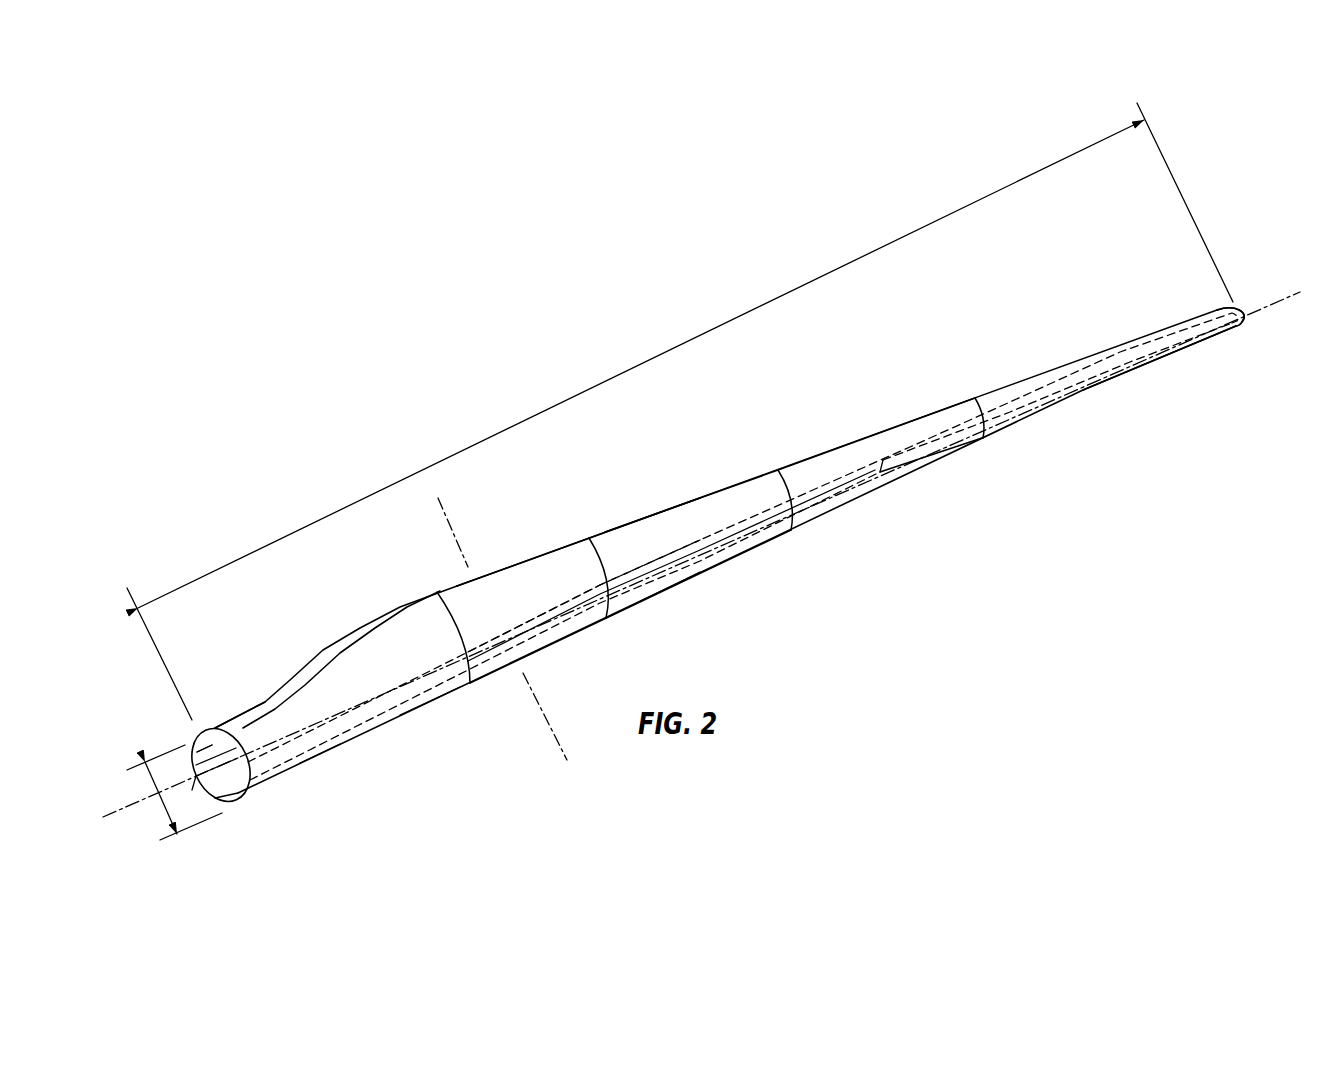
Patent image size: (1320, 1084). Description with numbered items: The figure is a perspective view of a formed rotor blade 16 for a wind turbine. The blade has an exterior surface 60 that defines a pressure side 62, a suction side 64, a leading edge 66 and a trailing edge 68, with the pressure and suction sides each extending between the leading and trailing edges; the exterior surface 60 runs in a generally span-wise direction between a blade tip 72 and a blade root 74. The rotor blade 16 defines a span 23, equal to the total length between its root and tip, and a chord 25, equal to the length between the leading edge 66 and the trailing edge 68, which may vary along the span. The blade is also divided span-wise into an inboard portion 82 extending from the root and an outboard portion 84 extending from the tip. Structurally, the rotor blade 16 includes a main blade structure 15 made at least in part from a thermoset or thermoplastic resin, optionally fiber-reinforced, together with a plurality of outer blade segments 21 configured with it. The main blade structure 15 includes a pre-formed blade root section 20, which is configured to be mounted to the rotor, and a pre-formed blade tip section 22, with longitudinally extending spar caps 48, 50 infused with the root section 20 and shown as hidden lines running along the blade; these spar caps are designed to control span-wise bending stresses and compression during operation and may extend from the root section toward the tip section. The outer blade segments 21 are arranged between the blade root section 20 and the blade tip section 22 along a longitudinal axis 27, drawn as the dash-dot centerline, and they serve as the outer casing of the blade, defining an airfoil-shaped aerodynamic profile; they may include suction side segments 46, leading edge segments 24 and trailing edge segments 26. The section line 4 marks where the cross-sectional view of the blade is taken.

The section line 4- 4 is at (430, 517).
The main blade structure 15 is at (380, 713).
The rotor blade 16 is at (400, 400).
The blade root section 20 is at (245, 708).
The outer blade segment 21 is at (605, 530).
The blade tip section 22 is at (1164, 364).
The span 23 is at (594, 392).
The leading edge segment 24 is at (498, 672).
The chord 25 is at (162, 806).
The trailing edge segment 26 is at (692, 508).
The longitudinal axis 27 is at (187, 787).
The suction side segment 46 is at (932, 424).
The spar cap 48 is at (192, 760).
The spar cap 50 is at (333, 730).
The exterior surface 60 is at (733, 502).
The pressure side 62 is at (608, 566).
The suction side 64 is at (573, 563).
The leading edge 66 is at (647, 607).
The trailing edge 68 is at (637, 516).
The blade tip 72 is at (1245, 312).
The blade root 74 is at (236, 802).
The inboard portion 82 is at (431, 735).
The outboard portion 84 is at (938, 485).